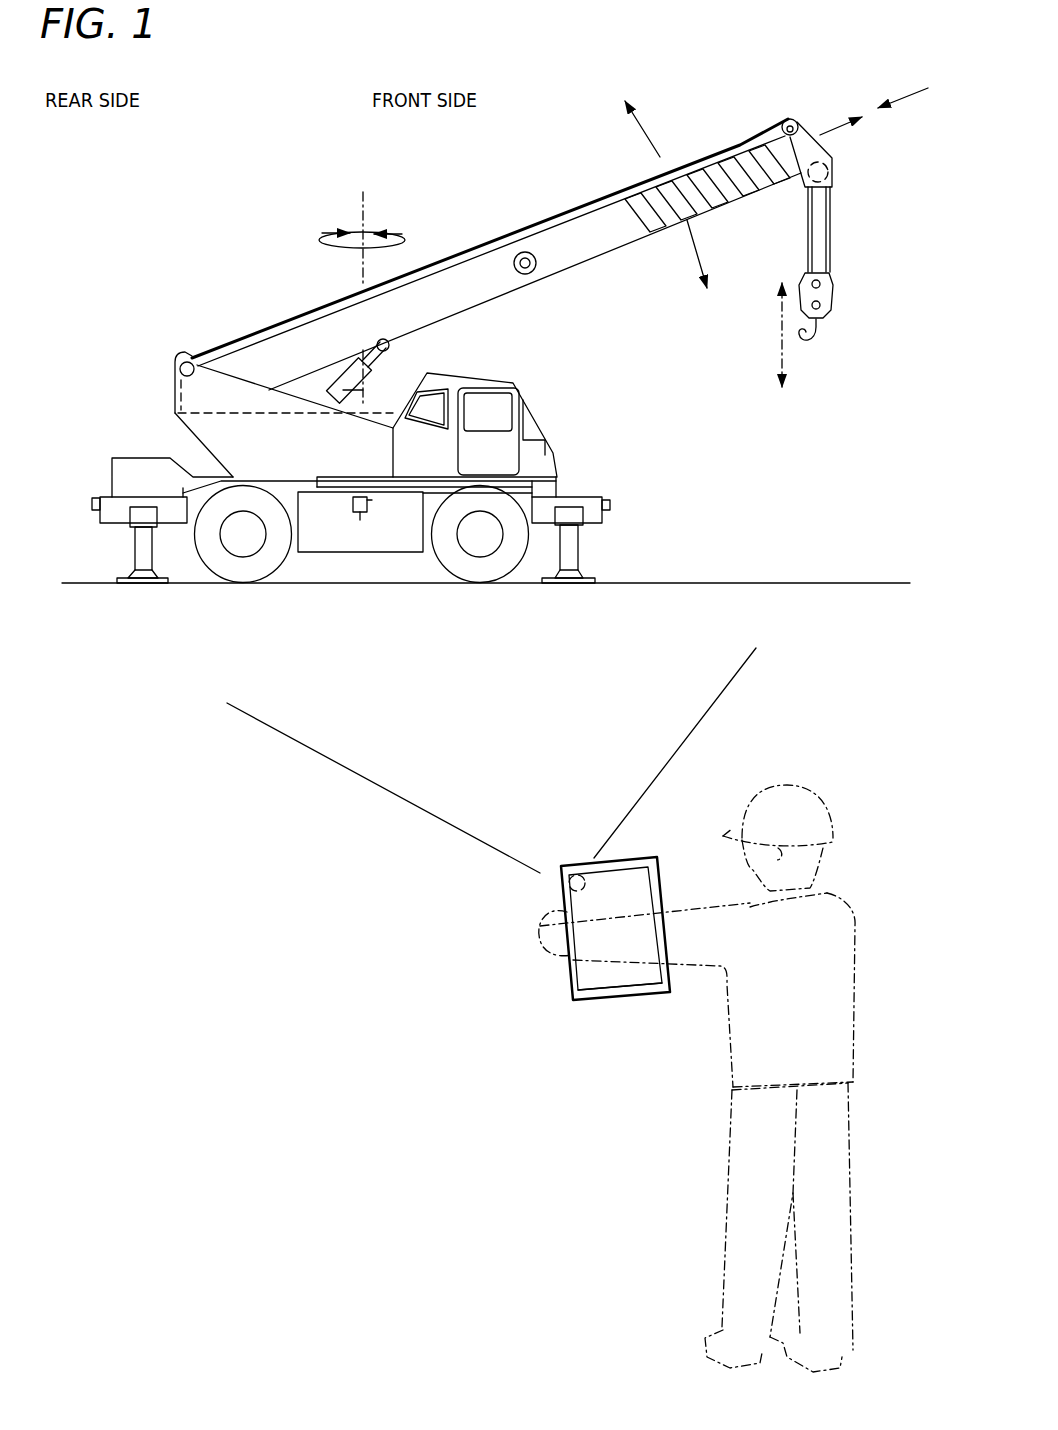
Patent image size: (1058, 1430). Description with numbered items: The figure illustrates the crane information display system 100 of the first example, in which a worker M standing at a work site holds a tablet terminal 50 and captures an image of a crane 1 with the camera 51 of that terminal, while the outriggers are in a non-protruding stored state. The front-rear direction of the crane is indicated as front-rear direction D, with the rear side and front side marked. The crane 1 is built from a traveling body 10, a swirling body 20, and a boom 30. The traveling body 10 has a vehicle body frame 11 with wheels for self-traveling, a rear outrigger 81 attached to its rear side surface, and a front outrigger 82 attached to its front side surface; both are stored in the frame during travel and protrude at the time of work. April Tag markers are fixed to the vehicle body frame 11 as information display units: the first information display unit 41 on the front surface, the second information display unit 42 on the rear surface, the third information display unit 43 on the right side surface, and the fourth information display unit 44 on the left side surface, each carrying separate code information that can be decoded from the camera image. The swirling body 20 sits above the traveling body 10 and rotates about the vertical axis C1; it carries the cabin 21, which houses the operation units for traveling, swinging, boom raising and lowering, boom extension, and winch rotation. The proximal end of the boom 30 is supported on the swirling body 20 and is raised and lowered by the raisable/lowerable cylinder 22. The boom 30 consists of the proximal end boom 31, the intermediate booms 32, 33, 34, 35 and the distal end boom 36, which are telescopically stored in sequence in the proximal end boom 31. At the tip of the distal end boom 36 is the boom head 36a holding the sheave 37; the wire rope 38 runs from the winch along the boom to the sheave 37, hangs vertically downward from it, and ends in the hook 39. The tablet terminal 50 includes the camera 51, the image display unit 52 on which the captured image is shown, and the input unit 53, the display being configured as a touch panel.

The crane 1 is at (510, 108).
The traveling body 10 is at (357, 562).
The vehicle body frame 11 is at (368, 545).
The swirling body 20 is at (165, 388).
The cabin 21 is at (552, 423).
The raisable/lowerable cylinder 22 is at (352, 378).
The boom 30 is at (567, 270).
The proximal end boom 31 is at (475, 278).
The intermediate boom 32 is at (645, 190).
The intermediate boom 33 is at (676, 180).
The intermediate boom 34 is at (705, 170).
The intermediate boom 35 is at (737, 160).
The distal end boom 36 is at (803, 130).
The boom head 36a is at (823, 147).
The sheave 37 is at (838, 172).
The wire rope 38 is at (531, 215).
The hook 39 is at (825, 297).
The first information display unit 41 is at (612, 505).
The second information display unit 42 is at (93, 500).
The third information display unit 43 is at (357, 515).
The fourth information display unit 44 is at (372, 520).
The tablet terminal 50 is at (645, 856).
The camera 51 is at (557, 892).
The image display unit 52 is at (600, 907).
The input unit 53 is at (602, 973).
The rear outrigger 81 is at (152, 543).
The front outrigger 82 is at (580, 540).
The crane information display system 100 is at (245, 834).
The worker M is at (797, 1003).
The vertical axis C1 is at (352, 213).
The front-rear direction D is at (365, 98).